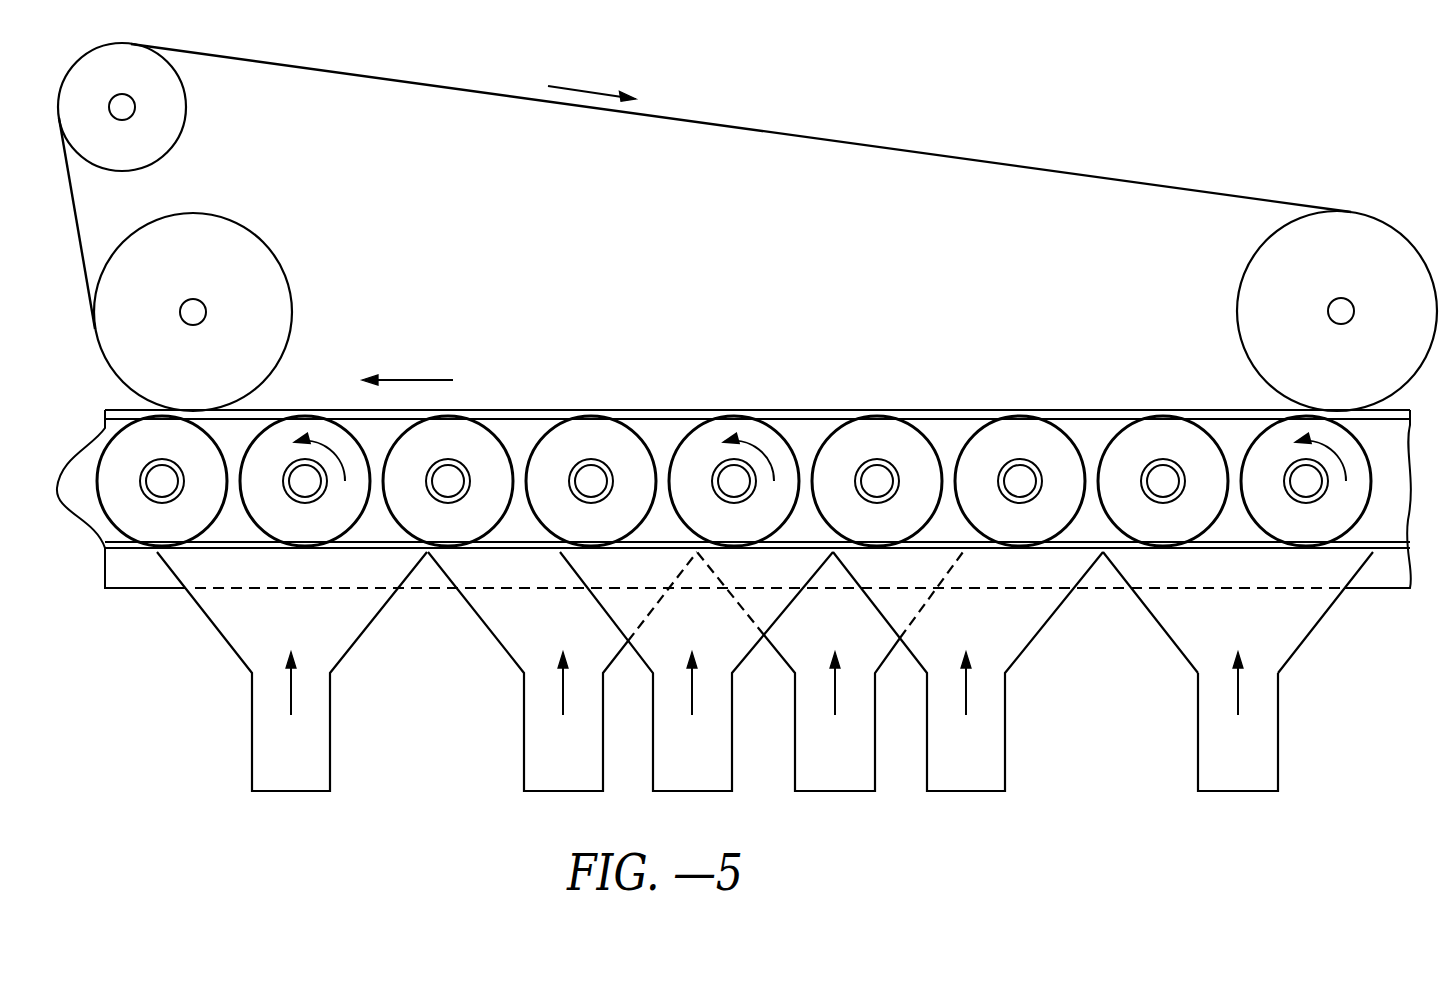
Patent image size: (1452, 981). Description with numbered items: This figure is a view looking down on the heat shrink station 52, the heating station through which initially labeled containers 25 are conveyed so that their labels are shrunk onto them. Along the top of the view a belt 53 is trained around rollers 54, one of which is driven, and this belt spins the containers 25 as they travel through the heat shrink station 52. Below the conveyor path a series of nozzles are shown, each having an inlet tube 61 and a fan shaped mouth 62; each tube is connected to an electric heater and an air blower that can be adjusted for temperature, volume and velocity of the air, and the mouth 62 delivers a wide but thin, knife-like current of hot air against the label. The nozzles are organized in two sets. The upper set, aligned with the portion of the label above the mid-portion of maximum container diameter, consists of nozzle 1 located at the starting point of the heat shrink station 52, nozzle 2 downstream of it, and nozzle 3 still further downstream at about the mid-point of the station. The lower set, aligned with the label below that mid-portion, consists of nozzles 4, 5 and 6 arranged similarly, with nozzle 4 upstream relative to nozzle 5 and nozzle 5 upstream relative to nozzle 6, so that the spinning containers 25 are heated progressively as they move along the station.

The nozzle 1 is at (1228, 758).
The nozzle 2 is at (956, 758).
The nozzle 3 is at (682, 758).
The nozzle 4 is at (825, 758).
The nozzle 5 is at (553, 758).
The nozzle 6 is at (281, 758).
The container 25 is at (1373, 460).
The heat shrink station 52 is at (1364, 680).
The belt 53 is at (960, 157).
The roller 54 is at (1270, 266).
The inlet tube 61 is at (1238, 671).
The fan shaped mouth 62 is at (1236, 626).